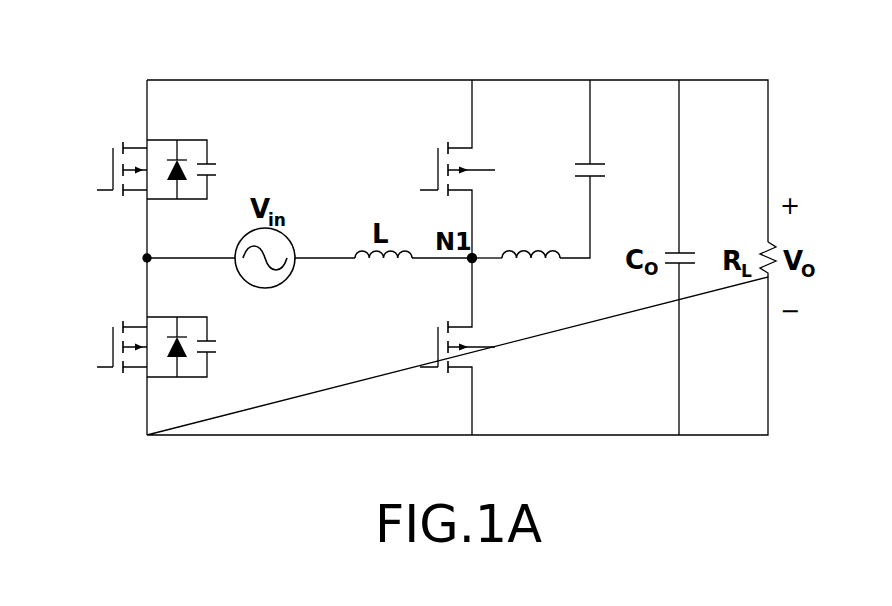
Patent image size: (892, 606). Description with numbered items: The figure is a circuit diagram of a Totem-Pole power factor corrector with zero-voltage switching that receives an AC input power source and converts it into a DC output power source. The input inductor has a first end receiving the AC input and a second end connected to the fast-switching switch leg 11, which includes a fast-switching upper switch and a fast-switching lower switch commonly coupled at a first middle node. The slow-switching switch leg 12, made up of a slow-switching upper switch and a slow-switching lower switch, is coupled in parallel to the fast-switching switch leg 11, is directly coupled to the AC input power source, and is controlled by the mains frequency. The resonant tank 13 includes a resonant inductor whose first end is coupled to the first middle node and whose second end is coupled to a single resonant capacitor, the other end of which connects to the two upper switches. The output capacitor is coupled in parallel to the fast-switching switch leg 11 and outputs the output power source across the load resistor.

The fast-switching switch leg 11 is at (432, 110).
The slow-switching switch leg 12 is at (106, 110).
The resonant tank 13 is at (541, 291).